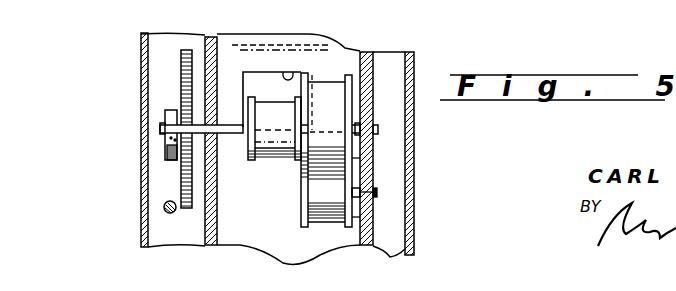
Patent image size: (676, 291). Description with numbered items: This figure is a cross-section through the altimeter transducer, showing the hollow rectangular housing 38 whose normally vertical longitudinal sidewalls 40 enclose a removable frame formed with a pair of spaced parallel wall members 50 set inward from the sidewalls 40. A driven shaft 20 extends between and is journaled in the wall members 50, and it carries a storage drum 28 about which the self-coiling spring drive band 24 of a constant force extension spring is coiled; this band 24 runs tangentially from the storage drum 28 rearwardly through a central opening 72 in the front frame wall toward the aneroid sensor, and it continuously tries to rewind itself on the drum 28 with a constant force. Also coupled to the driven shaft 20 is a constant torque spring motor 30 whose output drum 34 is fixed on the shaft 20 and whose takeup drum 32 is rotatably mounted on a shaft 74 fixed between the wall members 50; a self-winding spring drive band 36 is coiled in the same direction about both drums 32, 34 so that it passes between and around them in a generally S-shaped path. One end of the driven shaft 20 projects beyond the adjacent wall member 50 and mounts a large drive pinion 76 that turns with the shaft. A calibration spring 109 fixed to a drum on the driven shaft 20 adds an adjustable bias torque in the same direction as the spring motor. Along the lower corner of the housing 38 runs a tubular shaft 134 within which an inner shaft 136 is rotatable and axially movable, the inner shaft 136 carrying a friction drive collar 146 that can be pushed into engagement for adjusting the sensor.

The driven shaft 20 is at (160, 130).
The spring drive band 24 is at (273, 102).
The storage drum 28 is at (252, 160).
The constant torque spring motor 30 is at (330, 228).
The takeup drum 32 is at (360, 217).
The output drum 34 is at (360, 158).
The spring drive band 36 is at (333, 82).
The housing 38 is at (412, 71).
The longitudinal sidewalls 40 is at (141, 95).
The wall members 50 is at (247, 8).
The central opening 72 is at (289, 74).
The shaft 74 is at (377, 192).
The drive pinion 76 is at (181, 64).
The calibration spring 109 is at (165, 115).
The tubular shaft 134 is at (168, 202).
The inner shaft 136 is at (166, 211).
The friction drive collar 146 is at (149, 122).